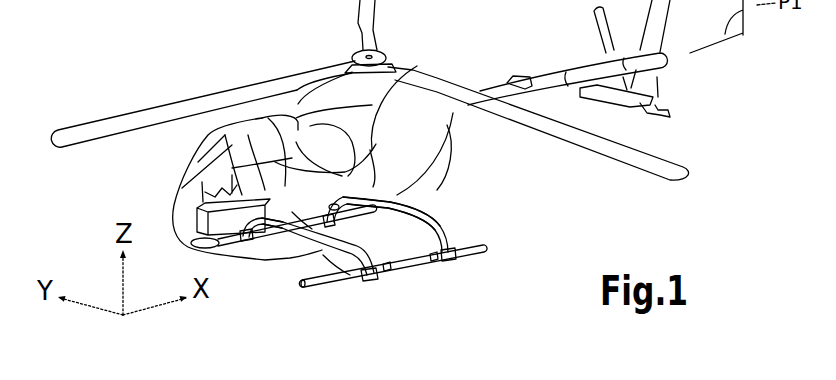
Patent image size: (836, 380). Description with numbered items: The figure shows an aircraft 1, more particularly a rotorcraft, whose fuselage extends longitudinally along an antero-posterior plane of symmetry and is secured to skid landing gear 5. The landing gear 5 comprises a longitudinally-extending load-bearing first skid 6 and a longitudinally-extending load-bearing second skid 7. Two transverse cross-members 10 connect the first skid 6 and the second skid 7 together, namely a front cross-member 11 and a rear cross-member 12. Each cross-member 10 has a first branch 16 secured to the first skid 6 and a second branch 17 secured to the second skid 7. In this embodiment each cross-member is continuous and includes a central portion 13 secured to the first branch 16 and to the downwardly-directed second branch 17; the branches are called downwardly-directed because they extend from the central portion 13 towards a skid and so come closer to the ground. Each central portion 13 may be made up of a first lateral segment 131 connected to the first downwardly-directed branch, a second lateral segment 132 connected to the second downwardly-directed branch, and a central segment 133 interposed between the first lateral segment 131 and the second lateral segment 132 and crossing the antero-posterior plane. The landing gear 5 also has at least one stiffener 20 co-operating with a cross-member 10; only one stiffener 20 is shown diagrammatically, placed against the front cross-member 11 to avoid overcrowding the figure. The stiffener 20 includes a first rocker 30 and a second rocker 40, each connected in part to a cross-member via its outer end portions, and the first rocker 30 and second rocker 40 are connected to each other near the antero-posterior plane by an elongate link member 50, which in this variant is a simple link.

The aircraft 1 is at (215, 40).
The skid landing gear 5 is at (490, 229).
The first skid 6 is at (447, 270).
The second skid 7 is at (257, 265).
The cross-member 10 is at (477, 221).
The front cross-member 11 is at (373, 262).
The rear cross-member 12 is at (447, 227).
The central portion 13 is at (395, 198).
The first lateral segment 131 is at (434, 204).
The second lateral segment 132 is at (351, 187).
The central segment 133 is at (388, 189).
The first branch 16 is at (456, 257).
The second branch 17 is at (183, 222).
The stiffener 20 is at (287, 250).
The first rocker 30 is at (340, 276).
The second rocker 40 is at (271, 262).
The elongate link member 50 is at (280, 258).